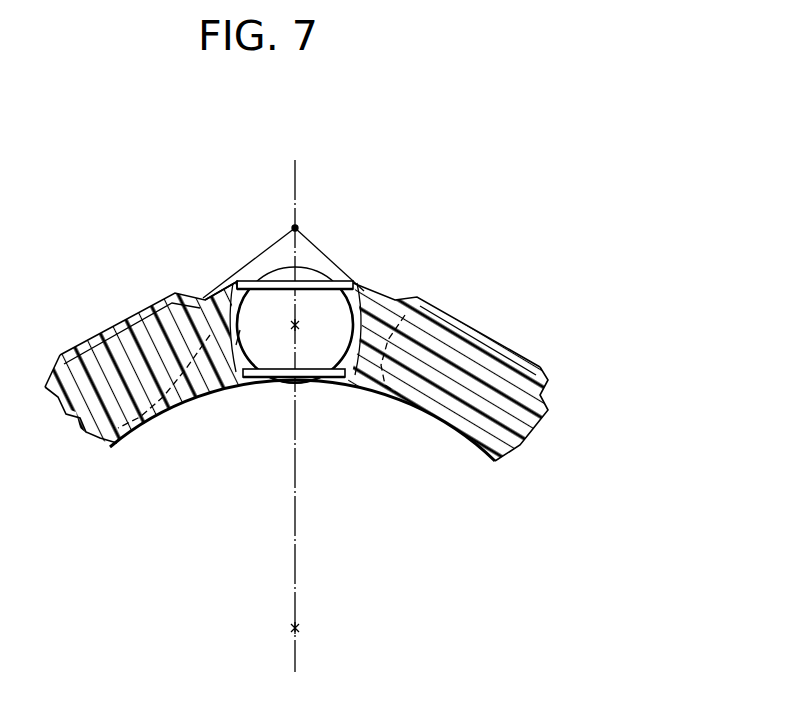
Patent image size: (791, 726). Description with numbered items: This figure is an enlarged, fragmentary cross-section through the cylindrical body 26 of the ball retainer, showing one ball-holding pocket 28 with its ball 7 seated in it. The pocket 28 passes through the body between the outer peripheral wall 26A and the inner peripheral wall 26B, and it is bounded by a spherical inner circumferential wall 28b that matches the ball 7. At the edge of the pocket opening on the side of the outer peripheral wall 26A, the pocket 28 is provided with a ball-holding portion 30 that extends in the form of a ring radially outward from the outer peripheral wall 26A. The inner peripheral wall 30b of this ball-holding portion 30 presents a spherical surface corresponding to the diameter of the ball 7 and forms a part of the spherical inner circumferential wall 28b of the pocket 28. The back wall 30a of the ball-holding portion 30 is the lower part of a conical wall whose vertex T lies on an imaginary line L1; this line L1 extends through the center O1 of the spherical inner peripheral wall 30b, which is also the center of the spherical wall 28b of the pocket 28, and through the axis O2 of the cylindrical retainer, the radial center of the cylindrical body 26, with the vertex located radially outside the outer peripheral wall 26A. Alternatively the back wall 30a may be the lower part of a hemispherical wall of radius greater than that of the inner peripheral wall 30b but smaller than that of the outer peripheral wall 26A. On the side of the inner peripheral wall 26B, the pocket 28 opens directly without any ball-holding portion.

The ball 7 is at (325, 277).
The cylindrical body 26 is at (441, 224).
The outer peripheral wall 26A is at (170, 316).
The inner peripheral wall 26B is at (448, 435).
The ball-holding pocket 28 is at (263, 348).
The spherical inner circumferential wall 28b is at (233, 340).
The ball-holding portion 30 is at (374, 291).
The back wall 30a is at (214, 289).
The inner peripheral wall 30b is at (258, 288).
The tangent point T is at (297, 227).
The imaginary line L1 is at (295, 401).
The center of the inner peripheral wall O1 is at (299, 325).
The axis of the cylindrical retainer O2 is at (299, 628).